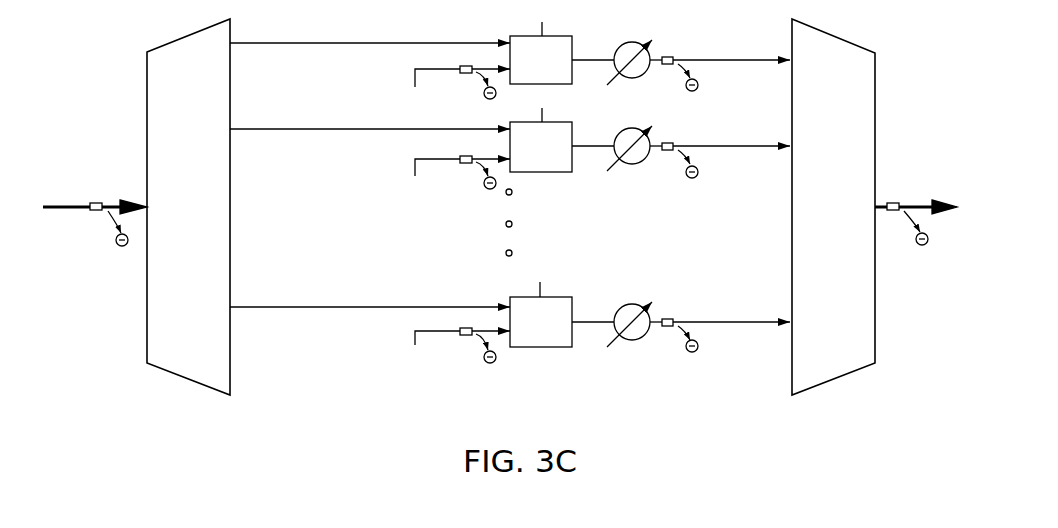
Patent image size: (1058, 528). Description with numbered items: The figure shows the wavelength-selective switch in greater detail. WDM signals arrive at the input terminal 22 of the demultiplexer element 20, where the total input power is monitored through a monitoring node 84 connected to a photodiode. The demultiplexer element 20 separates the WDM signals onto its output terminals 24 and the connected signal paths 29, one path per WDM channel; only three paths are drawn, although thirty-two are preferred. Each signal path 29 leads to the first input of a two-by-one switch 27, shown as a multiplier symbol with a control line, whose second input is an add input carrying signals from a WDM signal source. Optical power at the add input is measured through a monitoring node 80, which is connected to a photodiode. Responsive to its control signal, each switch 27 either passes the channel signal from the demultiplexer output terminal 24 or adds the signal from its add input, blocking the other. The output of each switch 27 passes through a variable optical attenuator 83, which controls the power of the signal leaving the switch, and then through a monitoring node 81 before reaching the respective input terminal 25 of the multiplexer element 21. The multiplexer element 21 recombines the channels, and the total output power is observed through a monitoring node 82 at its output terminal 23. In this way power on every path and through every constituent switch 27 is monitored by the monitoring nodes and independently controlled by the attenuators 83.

The demultiplexer element 20 is at (232, 362).
The multiplexer element 21 is at (792, 365).
The input terminal 22 is at (147, 205).
The output terminal 23 is at (876, 220).
The output terminals 24 is at (235, 44).
The input terminals 25 is at (789, 143).
The 2×1 switch 27 is at (518, 36).
The signal paths 29 is at (290, 44).
The monitoring node 80 is at (460, 68).
The monitoring node 81 is at (672, 57).
The monitoring node 82 is at (902, 203).
The variable optical attenuator 83 is at (620, 45).
The monitoring node 84 is at (95, 203).